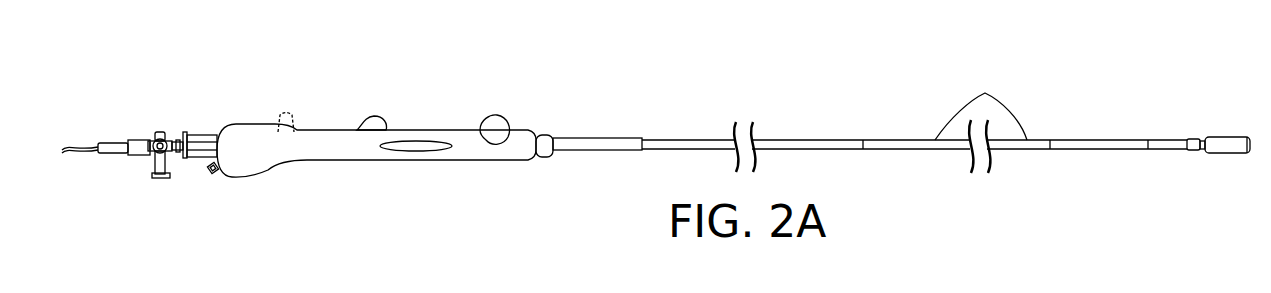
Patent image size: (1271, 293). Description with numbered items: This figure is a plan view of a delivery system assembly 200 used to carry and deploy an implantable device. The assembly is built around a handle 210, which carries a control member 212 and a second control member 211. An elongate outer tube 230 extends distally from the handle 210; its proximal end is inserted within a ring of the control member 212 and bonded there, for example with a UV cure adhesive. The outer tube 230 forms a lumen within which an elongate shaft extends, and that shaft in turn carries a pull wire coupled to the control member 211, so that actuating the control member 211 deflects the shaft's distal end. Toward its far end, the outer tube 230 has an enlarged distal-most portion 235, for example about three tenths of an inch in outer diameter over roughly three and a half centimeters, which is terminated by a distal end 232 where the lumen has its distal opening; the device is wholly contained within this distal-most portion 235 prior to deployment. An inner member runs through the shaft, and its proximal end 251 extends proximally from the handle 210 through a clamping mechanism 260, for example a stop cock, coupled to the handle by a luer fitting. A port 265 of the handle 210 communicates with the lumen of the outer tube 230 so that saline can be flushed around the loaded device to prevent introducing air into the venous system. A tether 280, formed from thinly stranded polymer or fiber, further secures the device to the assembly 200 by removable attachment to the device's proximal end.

The delivery system assembly 200 is at (213, 57).
The handle 210 is at (340, 140).
The control member 211 is at (373, 116).
The control member 212 is at (497, 115).
The elongate outer tube 230 is at (956, 120).
The distal end 232 is at (1250, 154).
The distal-most portion 235 is at (1237, 127).
The proximal end 251 is at (118, 153).
The clamping mechanism 260 is at (161, 186).
The port 265 is at (217, 175).
The tether 280 is at (70, 150).